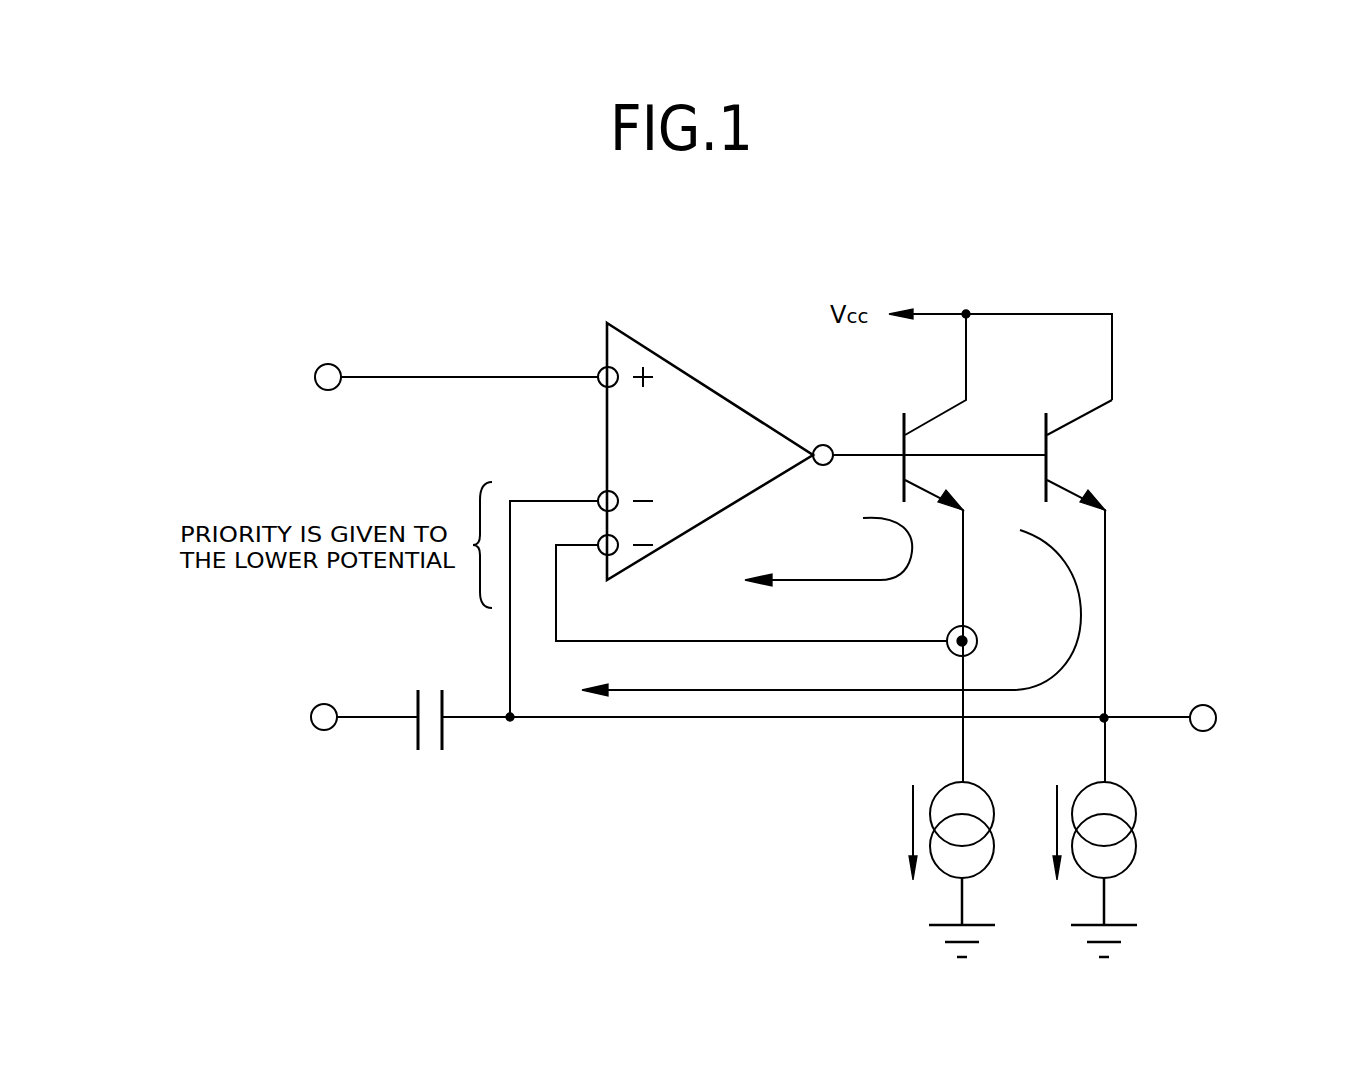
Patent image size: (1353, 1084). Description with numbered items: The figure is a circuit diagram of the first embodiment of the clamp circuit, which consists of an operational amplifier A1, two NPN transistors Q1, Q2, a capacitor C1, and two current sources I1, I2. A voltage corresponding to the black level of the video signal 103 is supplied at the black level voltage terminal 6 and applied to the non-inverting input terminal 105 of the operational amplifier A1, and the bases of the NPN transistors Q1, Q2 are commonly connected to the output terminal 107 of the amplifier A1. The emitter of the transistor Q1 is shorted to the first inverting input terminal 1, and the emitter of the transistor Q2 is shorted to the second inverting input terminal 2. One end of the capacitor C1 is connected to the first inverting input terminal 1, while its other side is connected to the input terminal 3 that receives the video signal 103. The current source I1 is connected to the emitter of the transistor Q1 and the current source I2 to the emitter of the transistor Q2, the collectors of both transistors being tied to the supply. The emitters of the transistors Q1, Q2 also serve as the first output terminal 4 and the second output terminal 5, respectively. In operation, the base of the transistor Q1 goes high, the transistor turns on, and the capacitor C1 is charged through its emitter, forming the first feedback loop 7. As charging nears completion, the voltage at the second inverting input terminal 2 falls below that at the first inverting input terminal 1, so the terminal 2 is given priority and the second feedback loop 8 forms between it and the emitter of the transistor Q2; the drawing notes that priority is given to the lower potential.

The first inverting input terminal 1 is at (600, 494).
The second inverting input terminal 2 is at (602, 556).
The input terminal 3 is at (324, 731).
The first output terminal 4 is at (1200, 733).
The second output terminal 5 is at (978, 630).
The black level voltage input terminal 6 is at (330, 363).
The first feedback loop 7 is at (831, 603).
The second feedback loop 8 is at (828, 548).
The video signal 103 is at (213, 720).
The non-inverting input terminal 105 is at (602, 368).
The output terminal 107 is at (830, 444).
The operational amplifier A1 is at (710, 451).
The capacitor C1 is at (445, 708).
The NPN transistor Q1 is at (1060, 452).
The NPN transistor Q2 is at (920, 443).
The current source I1 is at (1081, 869).
The current source I2 is at (936, 869).